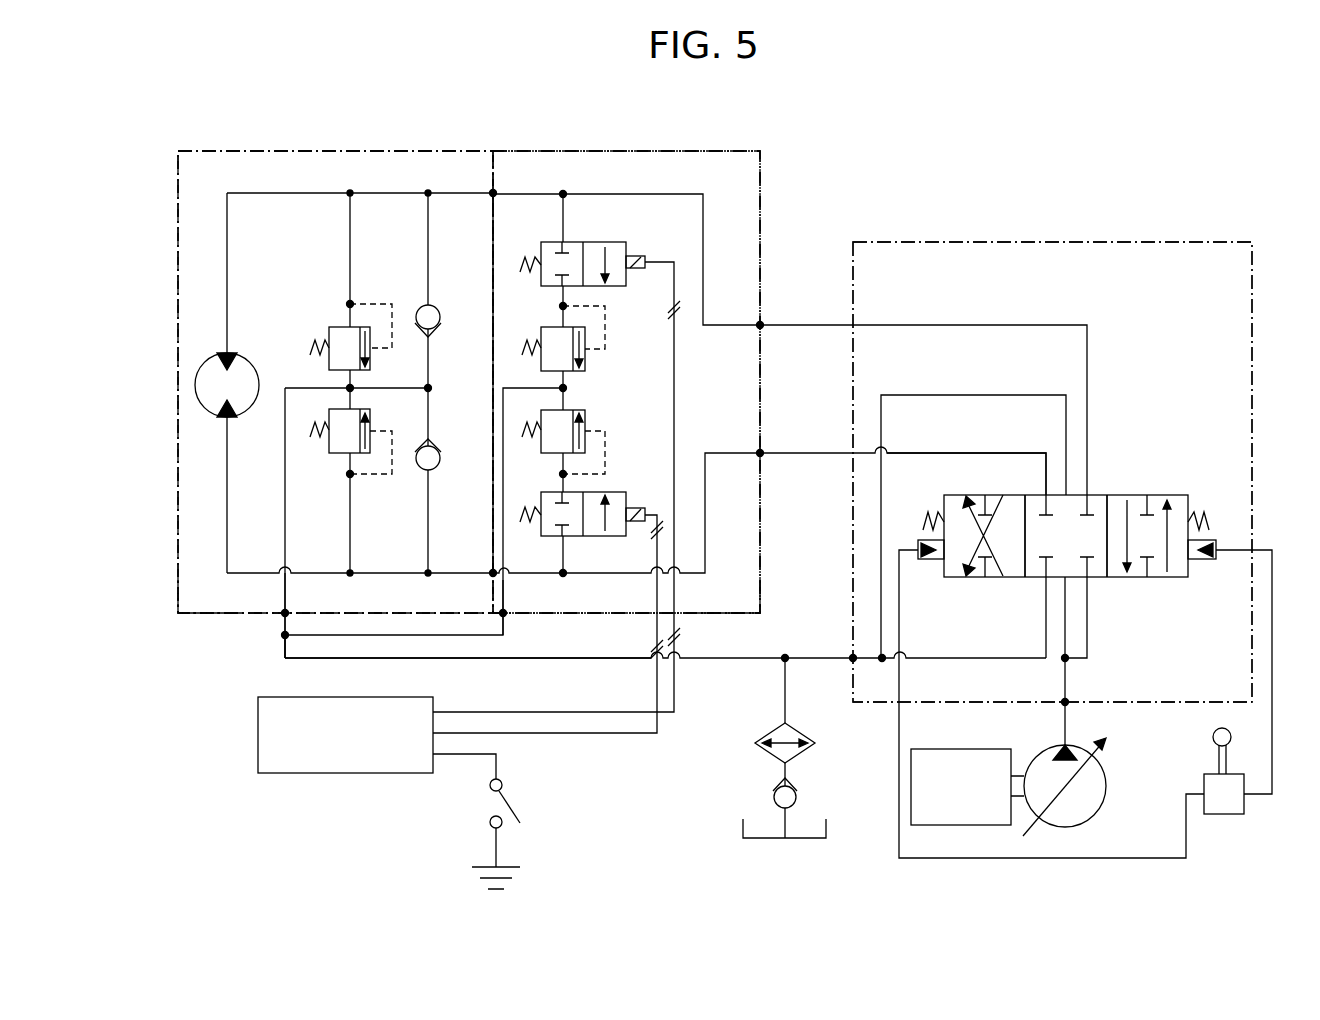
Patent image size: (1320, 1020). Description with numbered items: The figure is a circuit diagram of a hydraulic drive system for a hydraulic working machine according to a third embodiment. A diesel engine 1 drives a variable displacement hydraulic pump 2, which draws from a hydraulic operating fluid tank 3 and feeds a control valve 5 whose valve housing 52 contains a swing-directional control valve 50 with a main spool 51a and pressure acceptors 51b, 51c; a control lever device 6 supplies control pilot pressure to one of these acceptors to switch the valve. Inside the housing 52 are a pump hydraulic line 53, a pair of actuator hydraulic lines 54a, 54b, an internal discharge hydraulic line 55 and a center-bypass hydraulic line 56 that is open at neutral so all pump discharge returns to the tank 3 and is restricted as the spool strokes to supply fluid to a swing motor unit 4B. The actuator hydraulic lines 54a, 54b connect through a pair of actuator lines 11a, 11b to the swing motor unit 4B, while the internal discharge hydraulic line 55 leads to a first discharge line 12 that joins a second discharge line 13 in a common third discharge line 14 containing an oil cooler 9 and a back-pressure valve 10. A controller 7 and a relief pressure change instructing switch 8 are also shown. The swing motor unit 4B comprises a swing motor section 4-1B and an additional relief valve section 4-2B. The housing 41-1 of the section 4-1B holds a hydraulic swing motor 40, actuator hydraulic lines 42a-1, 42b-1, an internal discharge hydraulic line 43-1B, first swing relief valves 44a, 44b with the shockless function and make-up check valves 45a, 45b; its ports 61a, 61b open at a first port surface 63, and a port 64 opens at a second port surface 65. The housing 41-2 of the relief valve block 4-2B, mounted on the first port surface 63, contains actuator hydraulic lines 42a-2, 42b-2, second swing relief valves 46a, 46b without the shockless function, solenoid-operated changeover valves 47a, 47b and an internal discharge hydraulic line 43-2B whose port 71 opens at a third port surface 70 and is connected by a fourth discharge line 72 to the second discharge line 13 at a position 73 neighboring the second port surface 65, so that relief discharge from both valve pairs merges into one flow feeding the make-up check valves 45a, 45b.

The diesel engine 1 is at (975, 749).
The variable displacement hydraulic pump 2 is at (1108, 790).
The hydraulic operating fluid tank 3 is at (828, 826).
The swing motor unit 4B is at (505, 147).
The swing motor section 4-1B is at (282, 151).
The additional relief valve section 4-2B is at (680, 151).
The control valve 5 is at (1127, 241).
The control lever device 6 is at (1247, 808).
The controller 7 is at (386, 774).
The relief pressure change instructing switch 8 is at (512, 810).
The oil cooler 9 is at (812, 738).
The back-pressure valve 10 is at (800, 790).
The actuator line 11a is at (813, 323).
The actuator line 11b is at (813, 450).
The first discharge line 12 is at (816, 655).
The second discharge line 13 is at (457, 659).
The third discharge line 14 is at (790, 688).
The hydraulic swing motor 40 is at (240, 358).
The housing 41-1 is at (250, 187).
The housing 41-2 is at (740, 187).
The actuator hydraulic line 42a-1 is at (302, 193).
The actuator hydraulic line 42a-2 is at (532, 194).
The actuator hydraulic line 42b-1 is at (382, 574).
The actuator hydraulic line 42b-2 is at (642, 576).
The internal discharge hydraulic line 43-1B is at (285, 520).
The internal discharge hydraulic line 43-2B is at (508, 616).
The first swing relief valve 44a is at (335, 327).
The first swing relief valve 44b is at (335, 453).
The make-up check valve 45a is at (438, 330).
The make-up check valve 45b is at (438, 450).
The second swing relief valve 46a is at (590, 360).
The second swing relief valve 46b is at (590, 420).
The solenoid-operated changeover valve 47a is at (612, 242).
The solenoid-operated changeover valve 47b is at (604, 493).
The swing-directional control valve 50 is at (1160, 495).
The main spool 51a is at (1118, 494).
The pressure acceptor 51b is at (1205, 560).
The pressure acceptor 51c is at (932, 560).
The valve housing 52 is at (1122, 288).
The pump hydraulic line 53 is at (1068, 678).
The actuator hydraulic line 54a is at (930, 323).
The actuator hydraulic line 54b is at (937, 450).
The internal discharge hydraulic line 55 is at (986, 660).
The center-bypass hydraulic line 56 is at (1064, 610).
The port 61a is at (496, 196).
The port 61b is at (490, 571).
The first port surface 63 is at (496, 304).
The port 64 is at (288, 612).
The second port surface 65 is at (186, 616).
The third port surface 70 is at (720, 615).
The port 71 is at (512, 660).
The fourth discharge line 72 is at (313, 659).
The position 73 is at (283, 637).